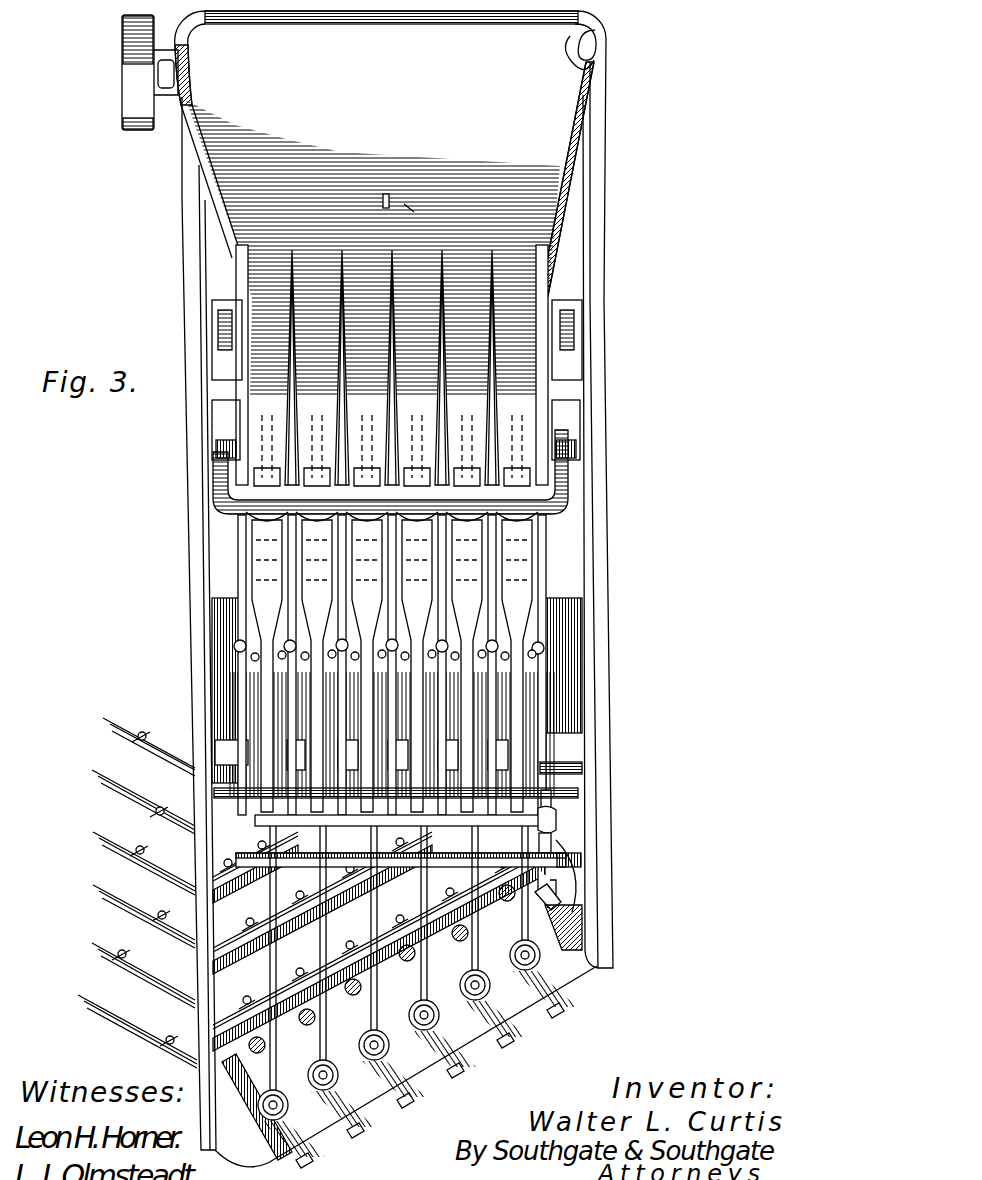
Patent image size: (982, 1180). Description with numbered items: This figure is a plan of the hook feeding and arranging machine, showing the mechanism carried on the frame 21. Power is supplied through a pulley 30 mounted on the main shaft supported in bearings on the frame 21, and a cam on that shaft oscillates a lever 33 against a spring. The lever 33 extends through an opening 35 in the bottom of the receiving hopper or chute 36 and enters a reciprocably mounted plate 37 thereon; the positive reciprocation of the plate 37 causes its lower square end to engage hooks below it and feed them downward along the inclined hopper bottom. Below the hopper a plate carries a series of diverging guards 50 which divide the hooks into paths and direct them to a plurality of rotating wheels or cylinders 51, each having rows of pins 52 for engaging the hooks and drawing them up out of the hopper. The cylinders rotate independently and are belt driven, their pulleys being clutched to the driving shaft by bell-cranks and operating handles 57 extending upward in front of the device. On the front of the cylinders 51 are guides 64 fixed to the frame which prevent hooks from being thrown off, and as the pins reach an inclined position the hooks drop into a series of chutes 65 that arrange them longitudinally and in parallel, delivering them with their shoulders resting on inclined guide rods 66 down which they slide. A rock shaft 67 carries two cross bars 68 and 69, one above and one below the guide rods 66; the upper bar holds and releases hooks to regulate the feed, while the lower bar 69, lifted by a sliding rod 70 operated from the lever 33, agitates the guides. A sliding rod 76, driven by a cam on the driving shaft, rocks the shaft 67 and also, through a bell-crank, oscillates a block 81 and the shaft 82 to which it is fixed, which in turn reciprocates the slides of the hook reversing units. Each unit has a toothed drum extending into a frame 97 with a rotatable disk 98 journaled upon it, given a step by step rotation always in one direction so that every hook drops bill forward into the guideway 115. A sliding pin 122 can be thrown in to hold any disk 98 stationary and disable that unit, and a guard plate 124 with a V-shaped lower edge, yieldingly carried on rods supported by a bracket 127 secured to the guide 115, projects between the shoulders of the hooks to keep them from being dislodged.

The frame 21 is at (184, 553).
The pulley 30 is at (146, 130).
The lever 33 is at (386, 196).
The opening 35 is at (408, 207).
The receiving hopper or chute 36 is at (578, 172).
The reciprocably mounted plate 37 is at (594, 56).
The diverging guards 50 is at (512, 296).
The rotating wheels or cylinders 51 is at (548, 380).
The pins 52 is at (540, 470).
The operating handles 57 is at (212, 667).
The guides 64 is at (552, 520).
The chutes 65 is at (526, 553).
The inclined guide rods 66 is at (272, 942).
The rock shaft 67 is at (566, 862).
The cross bar 68 is at (558, 817).
The cross bar 69 is at (552, 842).
The sliding rod 70 is at (455, 797).
The sliding rod 76 is at (552, 796).
The block 81 is at (556, 903).
The shaft 82 is at (556, 887).
The frame 97 is at (522, 1015).
The rotatable disk 98 is at (338, 1120).
The guideway 115 is at (138, 748).
The sliding pin 122 is at (485, 1035).
The guard plate 124 is at (112, 832).
The bracket 127 is at (110, 944).